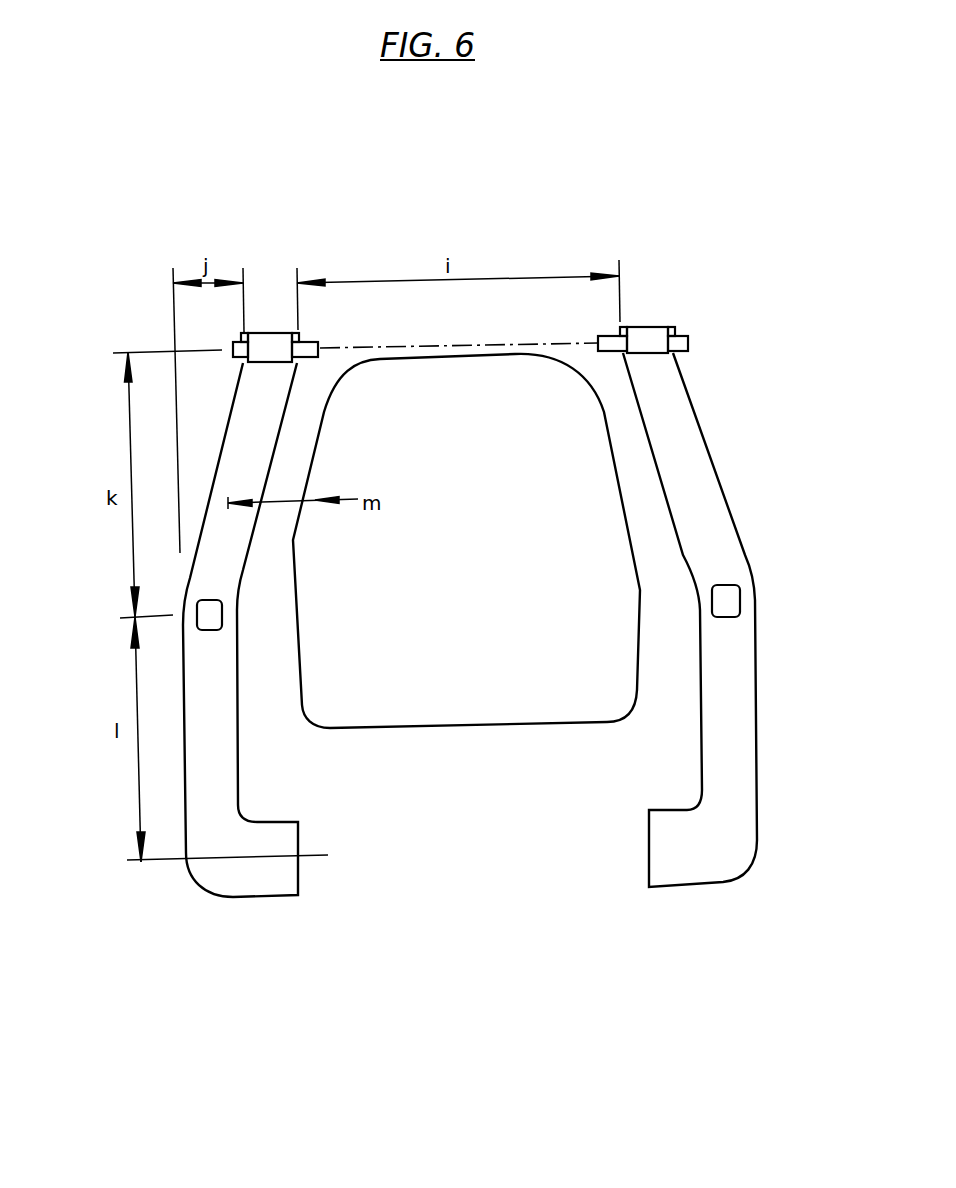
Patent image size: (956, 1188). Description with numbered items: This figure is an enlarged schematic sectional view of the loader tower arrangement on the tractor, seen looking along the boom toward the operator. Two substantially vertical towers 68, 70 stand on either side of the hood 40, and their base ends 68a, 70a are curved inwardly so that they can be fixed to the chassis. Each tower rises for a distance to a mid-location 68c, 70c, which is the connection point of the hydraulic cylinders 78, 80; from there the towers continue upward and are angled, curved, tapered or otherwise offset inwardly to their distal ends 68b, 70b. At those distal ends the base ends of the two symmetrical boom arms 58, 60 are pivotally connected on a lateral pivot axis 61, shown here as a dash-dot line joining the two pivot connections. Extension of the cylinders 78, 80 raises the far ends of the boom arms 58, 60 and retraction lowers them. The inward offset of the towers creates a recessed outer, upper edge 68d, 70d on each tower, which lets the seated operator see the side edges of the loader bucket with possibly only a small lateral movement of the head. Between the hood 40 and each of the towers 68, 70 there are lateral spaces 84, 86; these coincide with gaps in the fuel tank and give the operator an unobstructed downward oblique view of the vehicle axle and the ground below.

The hood 40 is at (608, 567).
The boom arm 58 is at (267, 342).
The boom arm 60 is at (648, 333).
The lateral pivot axis 61 is at (478, 343).
The tower 68 is at (245, 567).
The base end of tower 68a is at (237, 877).
The distal end of tower 68b is at (243, 363).
The mid-location of tower 68c is at (178, 600).
The recessed outer upper edge 68d is at (218, 458).
The tower 70 is at (687, 562).
The base end of tower 70a is at (697, 862).
The distal end of tower 70b is at (680, 353).
The mid-location of tower 70c is at (752, 595).
The recessed outer upper edge 70d is at (712, 470).
The hydraulic cylinder 78 is at (205, 617).
The hydraulic cylinder 80 is at (727, 605).
The lateral space 84 is at (293, 448).
The lateral space 86 is at (632, 453).